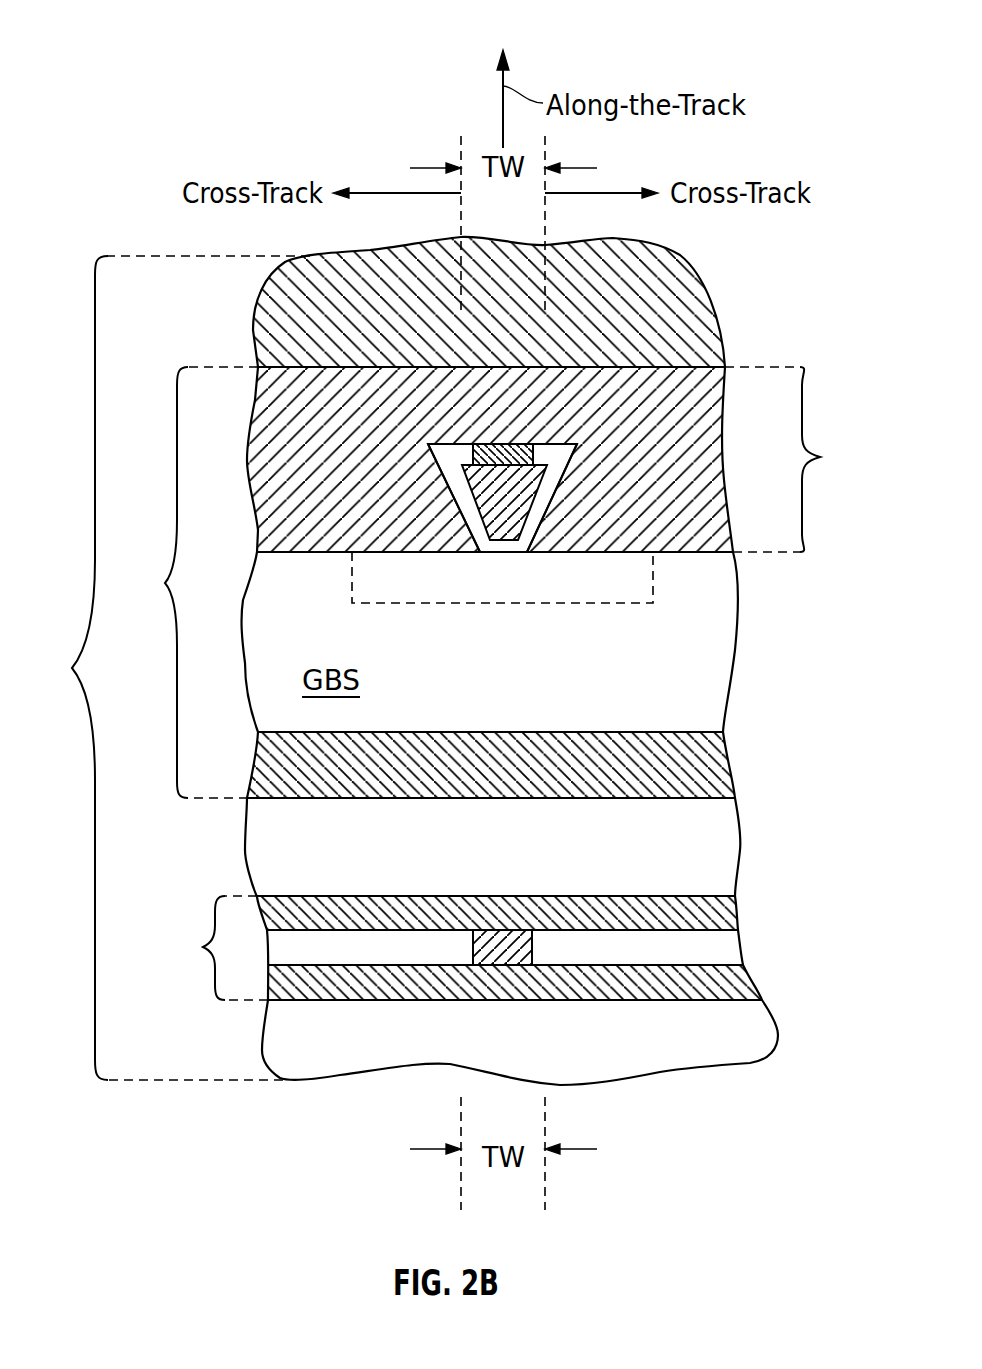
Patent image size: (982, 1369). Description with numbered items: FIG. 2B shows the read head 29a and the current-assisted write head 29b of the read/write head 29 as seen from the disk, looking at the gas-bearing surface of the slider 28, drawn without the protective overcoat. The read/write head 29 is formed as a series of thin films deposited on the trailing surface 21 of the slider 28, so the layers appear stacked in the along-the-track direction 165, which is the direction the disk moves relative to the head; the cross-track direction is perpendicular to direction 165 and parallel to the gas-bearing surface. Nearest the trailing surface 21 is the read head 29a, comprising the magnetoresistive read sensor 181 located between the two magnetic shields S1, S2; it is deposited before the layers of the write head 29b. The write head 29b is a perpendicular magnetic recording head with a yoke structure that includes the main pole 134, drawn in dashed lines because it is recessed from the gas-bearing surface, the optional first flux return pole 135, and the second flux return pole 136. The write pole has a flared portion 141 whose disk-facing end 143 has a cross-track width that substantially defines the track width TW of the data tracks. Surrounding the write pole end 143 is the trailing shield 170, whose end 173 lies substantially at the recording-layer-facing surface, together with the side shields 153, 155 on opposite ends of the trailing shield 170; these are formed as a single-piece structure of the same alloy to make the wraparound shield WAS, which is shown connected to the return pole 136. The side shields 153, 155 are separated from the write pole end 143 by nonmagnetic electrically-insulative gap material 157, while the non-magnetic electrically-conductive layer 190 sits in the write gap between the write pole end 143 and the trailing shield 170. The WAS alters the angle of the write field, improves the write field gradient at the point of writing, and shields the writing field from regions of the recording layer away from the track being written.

The along-the-track direction 165 is at (503, 76).
The second flux return pole 136 is at (703, 282).
The trailing magnetic shield 170 is at (592, 367).
The trailing shield end 173 is at (675, 430).
The side shield 153 is at (693, 507).
The side shield 155 is at (285, 517).
The electrically-conductive layer 190 is at (505, 448).
The flared portion of write pole 141 is at (473, 503).
The main pole 134 is at (610, 592).
The write pole end 143 is at (480, 552).
The nonmagnetic electrically-insulative gap material 157 is at (527, 530).
The first flux return pole 135 is at (713, 745).
The slider 28 is at (740, 820).
The magnetic shield S2 is at (727, 905).
The magnetic shield S1 is at (740, 973).
The magnetoresistive read sensor 181 is at (533, 942).
The trailing surface 21 is at (710, 1000).
The read/write head 29 is at (175, 668).
The read head 29a is at (211, 948).
The current-assisted write head 29b is at (186, 582).
The wraparound shield WAS is at (805, 459).